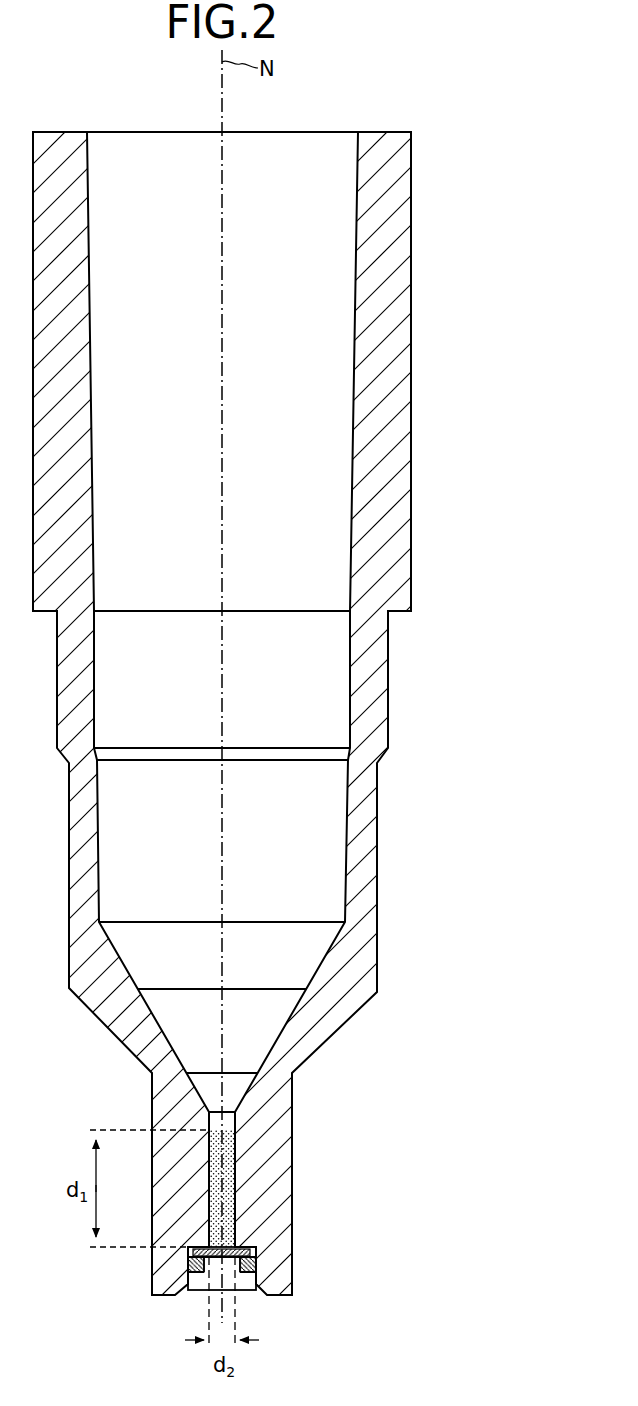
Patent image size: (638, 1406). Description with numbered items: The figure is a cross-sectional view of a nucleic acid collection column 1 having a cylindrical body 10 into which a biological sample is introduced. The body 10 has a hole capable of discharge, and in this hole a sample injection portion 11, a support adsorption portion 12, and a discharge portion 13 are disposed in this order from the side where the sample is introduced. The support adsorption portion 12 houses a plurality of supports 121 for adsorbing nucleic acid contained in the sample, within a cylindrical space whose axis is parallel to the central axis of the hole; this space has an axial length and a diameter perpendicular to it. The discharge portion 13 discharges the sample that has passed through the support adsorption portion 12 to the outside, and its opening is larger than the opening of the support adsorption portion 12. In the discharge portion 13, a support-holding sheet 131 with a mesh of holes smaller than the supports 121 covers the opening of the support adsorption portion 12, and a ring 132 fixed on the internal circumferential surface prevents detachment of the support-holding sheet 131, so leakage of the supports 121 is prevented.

The nucleic acid collection column 1 is at (389, 96).
The body 10 is at (411, 365).
The sample injection portion 11 is at (366, 455).
The support adsorption portion 12 is at (250, 1155).
The supports 121 is at (225, 1187).
The discharge portion 13 is at (175, 1277).
The support-holding sheet 131 is at (248, 1248).
The ring 132 is at (257, 1263).